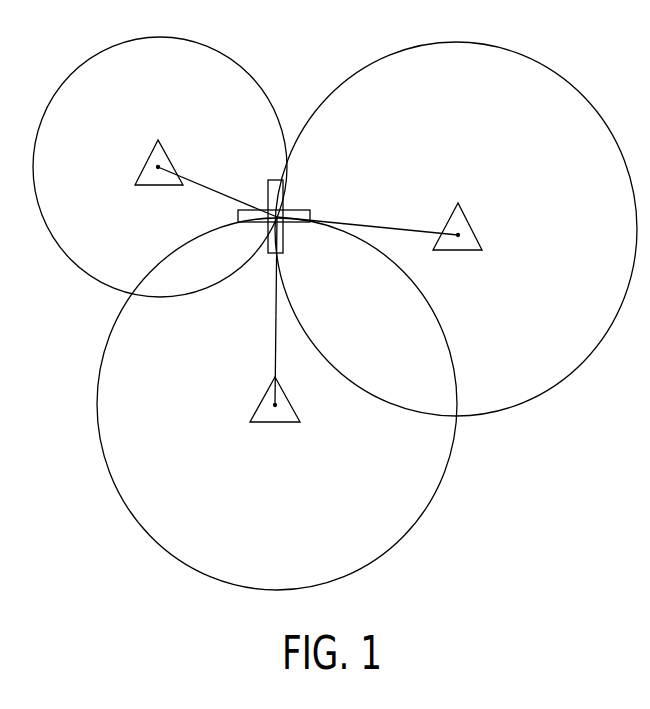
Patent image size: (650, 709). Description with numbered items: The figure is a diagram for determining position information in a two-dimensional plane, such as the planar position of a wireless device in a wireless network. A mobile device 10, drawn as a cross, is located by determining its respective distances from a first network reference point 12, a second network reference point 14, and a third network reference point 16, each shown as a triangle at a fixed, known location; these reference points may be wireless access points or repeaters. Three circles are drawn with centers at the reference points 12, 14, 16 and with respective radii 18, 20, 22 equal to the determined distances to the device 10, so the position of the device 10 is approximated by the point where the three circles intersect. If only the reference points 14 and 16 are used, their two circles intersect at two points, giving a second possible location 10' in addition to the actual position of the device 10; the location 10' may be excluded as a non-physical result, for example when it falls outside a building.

The mobile device 10 is at (281, 203).
The location 10' is at (489, 435).
The first network reference point 12 is at (149, 163).
The second network reference point 14 is at (473, 223).
The third network reference point 16 is at (278, 423).
The radius 18 is at (212, 188).
The radius 20 is at (395, 228).
The radius 22 is at (274, 348).